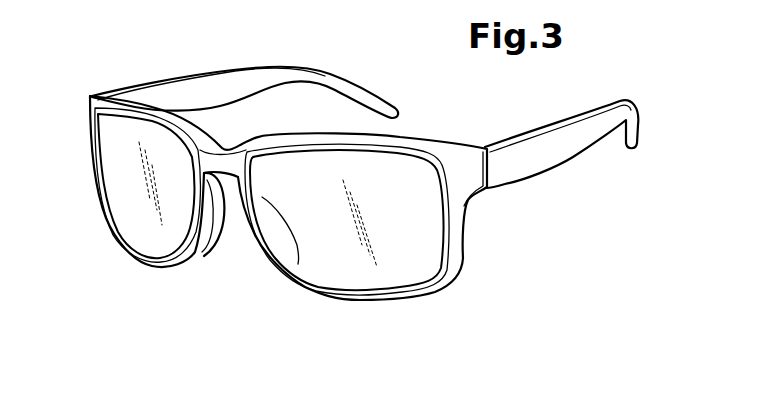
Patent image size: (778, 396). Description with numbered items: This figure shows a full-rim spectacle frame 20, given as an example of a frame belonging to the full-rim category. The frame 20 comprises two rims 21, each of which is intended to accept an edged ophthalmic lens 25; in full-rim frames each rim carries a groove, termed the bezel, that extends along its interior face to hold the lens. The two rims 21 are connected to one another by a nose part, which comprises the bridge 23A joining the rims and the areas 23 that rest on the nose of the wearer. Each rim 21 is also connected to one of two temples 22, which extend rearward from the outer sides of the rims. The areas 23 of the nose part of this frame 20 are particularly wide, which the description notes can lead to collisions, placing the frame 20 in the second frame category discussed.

The full-rim frame 20 is at (382, 193).
The rim 21 is at (130, 231).
The temple 22 is at (178, 97).
The areas resting on the nose 23 is at (278, 218).
The bridge 23A is at (218, 163).
The ophthalmic lens 25 is at (120, 154).